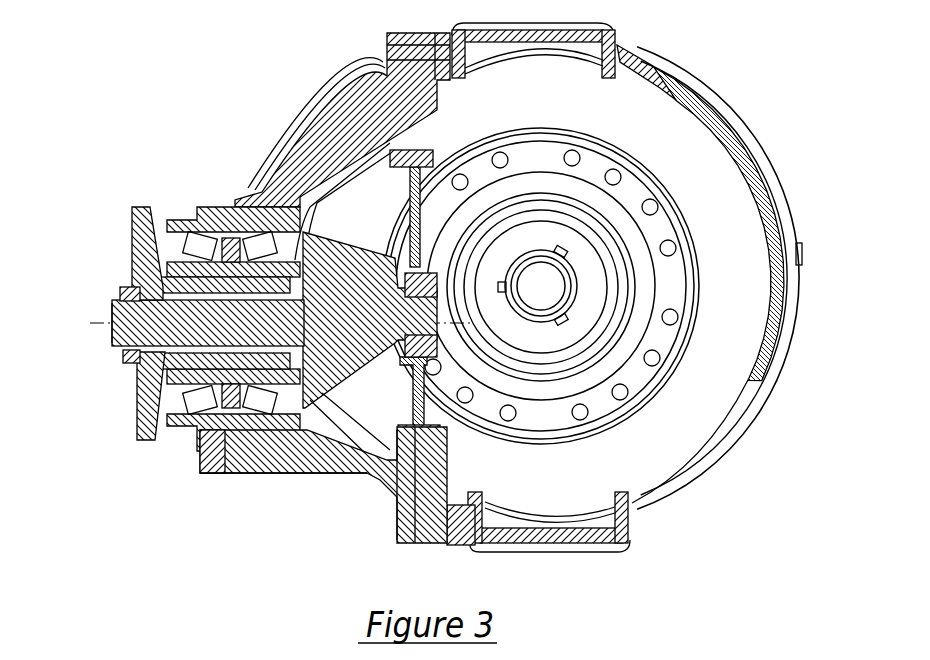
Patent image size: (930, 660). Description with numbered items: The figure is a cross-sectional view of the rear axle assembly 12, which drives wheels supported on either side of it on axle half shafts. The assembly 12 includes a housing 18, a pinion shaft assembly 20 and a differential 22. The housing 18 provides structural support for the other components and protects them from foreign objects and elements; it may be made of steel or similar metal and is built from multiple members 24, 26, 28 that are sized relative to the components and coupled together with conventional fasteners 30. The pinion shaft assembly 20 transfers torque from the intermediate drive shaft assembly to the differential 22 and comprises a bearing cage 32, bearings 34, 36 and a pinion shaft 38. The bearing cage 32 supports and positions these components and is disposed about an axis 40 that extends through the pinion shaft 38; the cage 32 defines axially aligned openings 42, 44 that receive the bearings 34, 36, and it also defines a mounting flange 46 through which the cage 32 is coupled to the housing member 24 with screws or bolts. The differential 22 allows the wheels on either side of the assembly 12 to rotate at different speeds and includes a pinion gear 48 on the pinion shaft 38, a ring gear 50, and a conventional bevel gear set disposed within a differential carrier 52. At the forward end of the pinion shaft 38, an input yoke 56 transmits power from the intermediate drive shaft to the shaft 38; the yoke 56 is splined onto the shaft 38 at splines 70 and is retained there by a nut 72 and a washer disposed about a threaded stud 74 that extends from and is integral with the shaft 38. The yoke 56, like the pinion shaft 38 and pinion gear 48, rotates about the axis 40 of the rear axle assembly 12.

The rear axle assembly 12 is at (233, 142).
The housing 18 is at (318, 522).
The pinion shaft assembly 20 is at (128, 373).
The differential 22 is at (668, 455).
The housing member 24 is at (235, 478).
The housing member 26 is at (547, 548).
The housing member 28 is at (773, 378).
The fasteners 30 is at (410, 520).
The bearing cage 32 is at (197, 460).
The bearing 34 is at (198, 250).
The bearing 36 is at (257, 237).
The pinion shaft 38 is at (120, 291).
The axis 40 is at (100, 322).
The opening 42 is at (197, 417).
The opening 44 is at (240, 463).
The mounting flange 46 is at (203, 463).
The pinion gear 48 is at (338, 257).
The ring gear 50 is at (707, 413).
The differential carrier 52 is at (637, 190).
The input yoke 56 is at (130, 215).
The splines 70 is at (135, 393).
The nut 72 is at (123, 357).
The threaded stud 74 is at (117, 335).